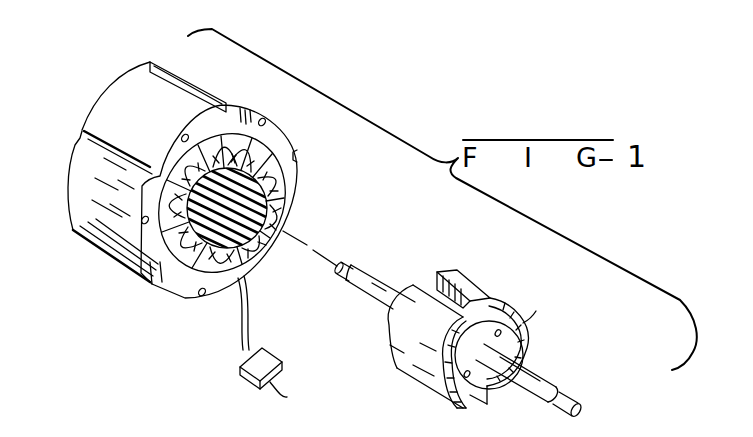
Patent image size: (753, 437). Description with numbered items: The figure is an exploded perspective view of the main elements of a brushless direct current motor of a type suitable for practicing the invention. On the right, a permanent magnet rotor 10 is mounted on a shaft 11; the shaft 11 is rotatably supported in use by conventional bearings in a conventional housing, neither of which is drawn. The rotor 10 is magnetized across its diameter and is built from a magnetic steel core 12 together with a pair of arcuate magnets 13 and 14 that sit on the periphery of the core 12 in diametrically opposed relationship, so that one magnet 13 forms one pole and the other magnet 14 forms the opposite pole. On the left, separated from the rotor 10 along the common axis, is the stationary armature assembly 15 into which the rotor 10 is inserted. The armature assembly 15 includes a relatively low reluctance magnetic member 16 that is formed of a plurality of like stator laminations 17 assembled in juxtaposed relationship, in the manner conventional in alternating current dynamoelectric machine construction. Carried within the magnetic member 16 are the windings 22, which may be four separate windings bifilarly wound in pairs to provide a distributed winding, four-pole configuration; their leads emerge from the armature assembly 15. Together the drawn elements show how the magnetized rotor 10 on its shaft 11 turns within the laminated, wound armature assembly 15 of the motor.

The permanent magnet rotor 10 is at (458, 317).
The shaft 11 is at (379, 286).
The magnetic steel core 12 is at (503, 343).
The arcuate magnet 13 is at (448, 397).
The arcuate magnet 14 is at (523, 320).
The stationary armature assembly 15 is at (100, 270).
The low reluctance magnetic member 16 is at (273, 123).
The stator laminations 17 is at (218, 84).
The windings 22 is at (293, 203).